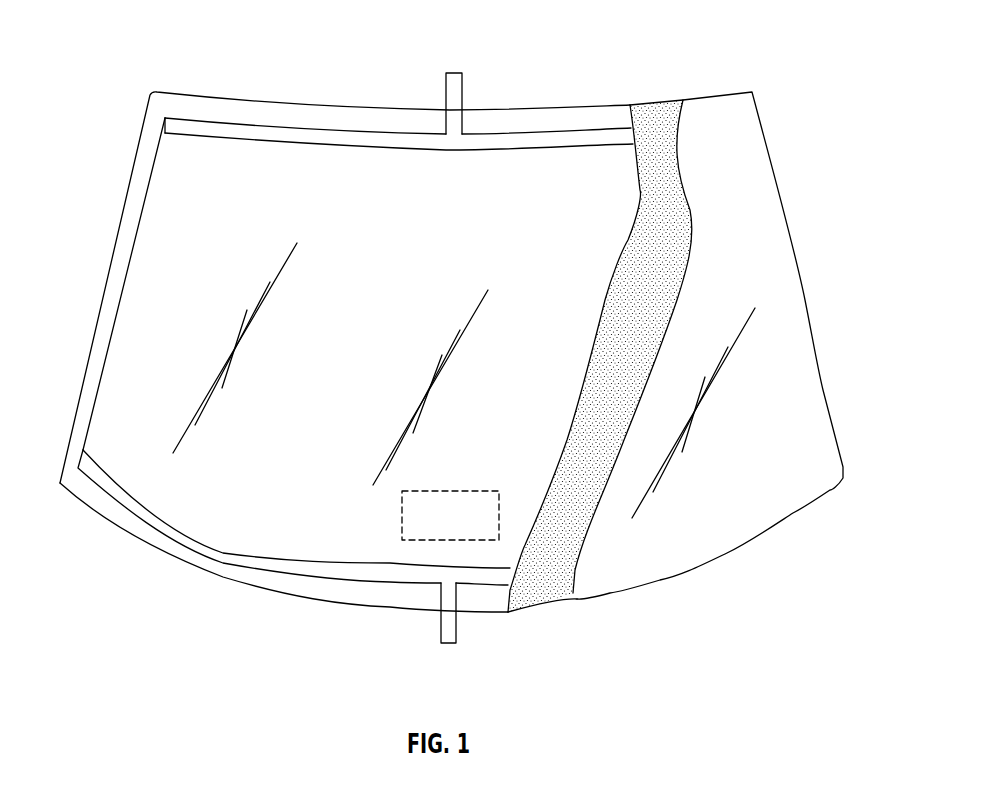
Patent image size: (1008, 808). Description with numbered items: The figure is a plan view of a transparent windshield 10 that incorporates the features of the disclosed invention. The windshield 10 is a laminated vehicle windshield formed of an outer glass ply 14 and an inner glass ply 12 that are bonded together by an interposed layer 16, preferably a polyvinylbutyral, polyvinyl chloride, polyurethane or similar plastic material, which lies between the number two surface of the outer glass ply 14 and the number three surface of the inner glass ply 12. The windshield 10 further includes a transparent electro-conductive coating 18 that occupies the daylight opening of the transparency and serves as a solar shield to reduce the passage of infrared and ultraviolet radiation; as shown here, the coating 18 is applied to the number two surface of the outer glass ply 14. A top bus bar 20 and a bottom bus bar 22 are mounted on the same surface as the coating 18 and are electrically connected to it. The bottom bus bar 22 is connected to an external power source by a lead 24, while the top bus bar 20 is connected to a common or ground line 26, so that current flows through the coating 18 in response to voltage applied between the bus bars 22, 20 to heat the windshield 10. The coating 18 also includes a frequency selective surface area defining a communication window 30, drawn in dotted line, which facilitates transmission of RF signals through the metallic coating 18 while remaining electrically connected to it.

The windshield 10 is at (794, 157).
The inner glass ply 12 is at (783, 328).
The outer glass ply 14 is at (145, 182).
The interposed layer 16 is at (650, 130).
The electro-conductive coating 18 is at (152, 263).
The top bus bar 20 is at (547, 140).
The bottom bus bar 22 is at (272, 555).
The lead 24 is at (457, 637).
The common or ground line 26 is at (448, 78).
The communication window 30 is at (475, 490).